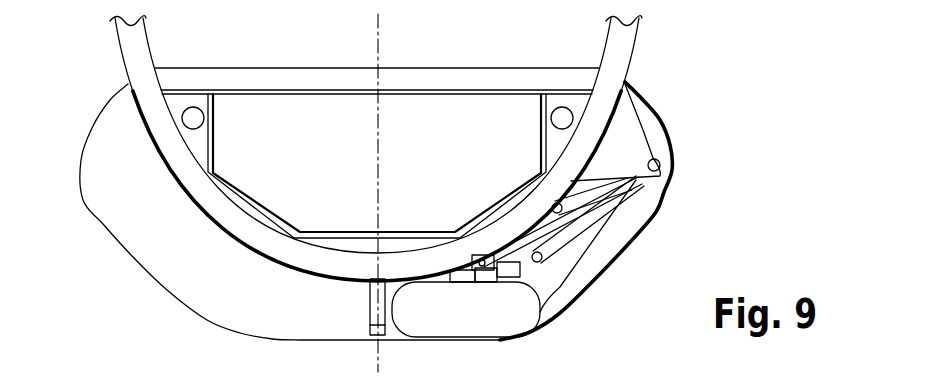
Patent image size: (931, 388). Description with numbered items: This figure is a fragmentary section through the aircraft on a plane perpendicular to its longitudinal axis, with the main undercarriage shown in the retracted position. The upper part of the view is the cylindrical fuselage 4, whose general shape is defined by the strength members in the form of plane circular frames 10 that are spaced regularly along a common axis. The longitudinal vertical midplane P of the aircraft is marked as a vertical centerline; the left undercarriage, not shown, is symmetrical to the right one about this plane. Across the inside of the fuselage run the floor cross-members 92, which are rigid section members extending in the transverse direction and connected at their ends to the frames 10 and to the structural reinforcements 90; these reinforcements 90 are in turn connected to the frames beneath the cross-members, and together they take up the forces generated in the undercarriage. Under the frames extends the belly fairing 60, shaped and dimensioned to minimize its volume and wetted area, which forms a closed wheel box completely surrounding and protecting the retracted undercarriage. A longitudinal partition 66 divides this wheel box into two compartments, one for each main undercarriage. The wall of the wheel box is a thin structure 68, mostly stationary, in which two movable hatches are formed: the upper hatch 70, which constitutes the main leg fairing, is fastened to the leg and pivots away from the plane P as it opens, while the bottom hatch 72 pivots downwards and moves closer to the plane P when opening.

The fuselage 4 is at (625, 48).
The frame 10 is at (128, 43).
The longitudinal vertical midplane P is at (380, 38).
The floor cross-member 92 is at (280, 80).
The structural reinforcement 90 is at (201, 104).
The belly fairing 60 is at (665, 212).
The upper hatch 70 is at (640, 233).
The thin structure 68 is at (603, 270).
The longitudinal partition 66 is at (367, 307).
The bottom hatch 72 is at (467, 362).